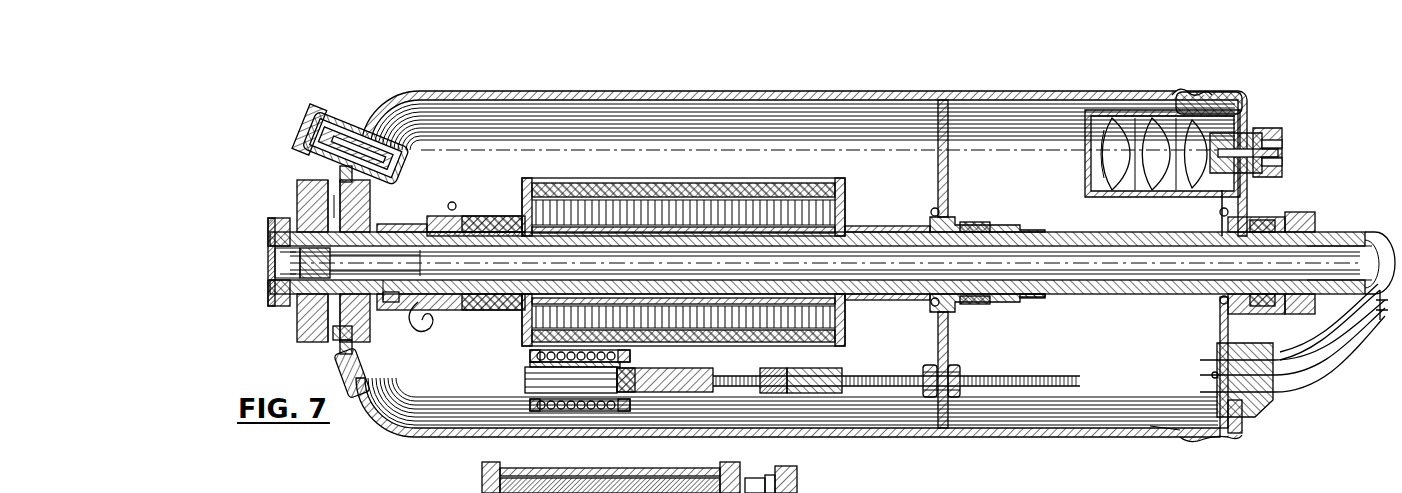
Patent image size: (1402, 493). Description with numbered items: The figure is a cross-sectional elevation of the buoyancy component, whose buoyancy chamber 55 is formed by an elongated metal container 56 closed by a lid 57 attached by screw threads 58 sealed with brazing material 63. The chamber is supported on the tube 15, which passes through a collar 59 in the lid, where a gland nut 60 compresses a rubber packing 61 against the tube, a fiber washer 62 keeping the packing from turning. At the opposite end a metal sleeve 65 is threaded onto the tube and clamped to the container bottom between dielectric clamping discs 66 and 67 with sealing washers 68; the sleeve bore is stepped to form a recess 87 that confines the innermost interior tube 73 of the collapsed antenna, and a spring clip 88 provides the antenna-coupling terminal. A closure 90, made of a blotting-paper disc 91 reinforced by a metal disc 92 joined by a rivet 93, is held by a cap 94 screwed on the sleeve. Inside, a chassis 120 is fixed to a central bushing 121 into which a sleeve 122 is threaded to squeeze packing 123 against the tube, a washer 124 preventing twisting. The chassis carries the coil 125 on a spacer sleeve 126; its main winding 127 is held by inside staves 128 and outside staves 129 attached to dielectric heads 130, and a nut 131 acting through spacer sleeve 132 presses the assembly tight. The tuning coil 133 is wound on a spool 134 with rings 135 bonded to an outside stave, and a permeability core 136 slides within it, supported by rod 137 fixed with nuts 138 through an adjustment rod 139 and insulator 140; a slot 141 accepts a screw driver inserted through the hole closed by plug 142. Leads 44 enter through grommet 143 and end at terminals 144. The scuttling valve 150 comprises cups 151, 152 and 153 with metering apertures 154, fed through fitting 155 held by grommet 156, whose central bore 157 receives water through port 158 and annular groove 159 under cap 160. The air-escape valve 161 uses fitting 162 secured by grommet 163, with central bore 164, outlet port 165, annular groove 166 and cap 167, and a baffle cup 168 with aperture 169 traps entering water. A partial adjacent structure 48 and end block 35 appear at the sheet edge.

The tube 15 is at (1158, 296).
The end block 35 is at (797, 470).
The leads 44 is at (1342, 322).
The housing section 48 is at (725, 490).
The buoyancy chamber 55 is at (1150, 430).
The container 56 is at (1046, 437).
The lid 57 is at (1238, 434).
The screw threads 58 is at (1206, 440).
The collar 59 is at (1248, 222).
The gland nut 60 is at (1305, 228).
The packing 61 is at (1256, 316).
The washer 62 is at (1290, 316).
The brazing material 63 is at (1180, 97).
The metal sleeve 65 is at (410, 224).
The clamping disc 66 is at (366, 224).
The clamping disc 67 is at (325, 344).
The washers 68 is at (340, 176).
The innermost interior tube 73 is at (387, 302).
The recess 87 is at (352, 333).
The spring clip 88 is at (424, 336).
The closure 90 is at (262, 290).
The disc 91 is at (270, 240).
The disc 92 is at (268, 250).
The rivet 93 is at (270, 262).
The cap 94 is at (300, 302).
The chassis 120 is at (948, 140).
The central bushing 121 is at (1000, 305).
The sleeve 122 is at (1046, 300).
The packing 123 is at (952, 218).
The washer 124 is at (963, 312).
The coil 125 is at (780, 168).
The spacer sleeve 126 is at (912, 226).
The main winding 127 is at (644, 186).
The inside staves 128 is at (668, 208).
The outside staves 129 is at (750, 186).
The heads 130 is at (522, 318).
The nut 131 is at (462, 222).
The spacer sleeve 132 is at (490, 226).
The tuning coil 133 is at (620, 412).
The spool 134 is at (573, 410).
The rings 135 is at (538, 412).
The permeability core 136 is at (700, 393).
The rod 137 is at (880, 388).
The nuts 138 is at (926, 370).
The adjustment rod 139 is at (770, 394).
The insulator 140 is at (820, 394).
The slot 141 is at (560, 380).
The plug 142 is at (362, 371).
The grommet 143 is at (1270, 410).
The terminals 144 is at (1200, 392).
The scuttling valve 150 is at (1253, 118).
The cup 151 is at (1216, 198).
The second cup 152 is at (1196, 172).
The third cup 153 is at (1108, 192).
The aperture 154 is at (1098, 160).
The fitting 155 is at (1250, 175).
The grommet 156 is at (1232, 130).
The central bore 157 is at (1260, 130).
The port 158 is at (1280, 147).
The annular groove 159 is at (1280, 170).
The cap 160 is at (1280, 158).
The air-escape valve 161 is at (333, 122).
The fitting 162 is at (322, 132).
The grommet 163 is at (376, 126).
The central bore 164 is at (352, 128).
The outlet port 165 is at (330, 126).
The annular groove 166 is at (324, 151).
The cap 167 is at (324, 141).
The baffle cup 168 is at (404, 158).
The aperture 169 is at (405, 171).